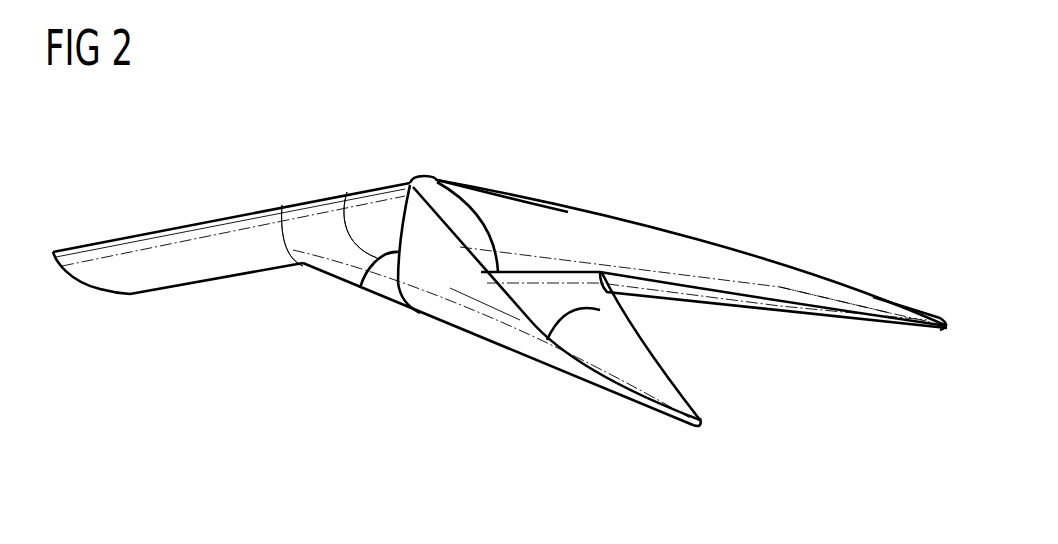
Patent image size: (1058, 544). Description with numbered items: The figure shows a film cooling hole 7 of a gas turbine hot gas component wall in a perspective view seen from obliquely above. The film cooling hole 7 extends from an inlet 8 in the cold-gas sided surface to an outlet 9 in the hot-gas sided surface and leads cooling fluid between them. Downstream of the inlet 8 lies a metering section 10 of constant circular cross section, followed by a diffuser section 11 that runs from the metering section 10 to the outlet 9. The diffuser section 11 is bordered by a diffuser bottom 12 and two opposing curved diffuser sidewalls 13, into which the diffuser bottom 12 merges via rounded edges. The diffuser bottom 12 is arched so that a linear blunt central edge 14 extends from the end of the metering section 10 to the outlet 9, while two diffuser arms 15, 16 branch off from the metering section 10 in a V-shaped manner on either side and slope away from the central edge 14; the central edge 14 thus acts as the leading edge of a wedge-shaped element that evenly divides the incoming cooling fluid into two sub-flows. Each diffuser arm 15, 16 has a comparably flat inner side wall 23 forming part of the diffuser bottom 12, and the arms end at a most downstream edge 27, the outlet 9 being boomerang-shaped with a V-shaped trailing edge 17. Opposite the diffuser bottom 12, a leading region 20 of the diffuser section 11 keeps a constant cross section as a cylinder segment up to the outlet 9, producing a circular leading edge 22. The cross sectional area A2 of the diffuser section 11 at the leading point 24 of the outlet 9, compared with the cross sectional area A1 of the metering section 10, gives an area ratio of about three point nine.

The film cooling hole 7 is at (298, 345).
The inlet 8 is at (80, 283).
The outlet 9 is at (881, 264).
The metering section 10 is at (188, 217).
The diffuser section 11 is at (598, 197).
The diffuser bottom 12 is at (694, 295).
The diffuser sidewall 13 is at (568, 211).
The central edge 14 is at (527, 271).
The diffuser arm 15 is at (623, 348).
The diffuser arm 16 is at (806, 278).
The trailing edge 17 is at (650, 332).
The leading region 20 is at (437, 183).
The leading edge 22 is at (406, 191).
The inner side wall 23 is at (752, 297).
The leading point 24 is at (420, 178).
The most downstream edge 27 is at (699, 428).
The cross sectional area of the metering section A1 is at (270, 238).
The cross sectional area of the diffuser section A2 is at (360, 288).